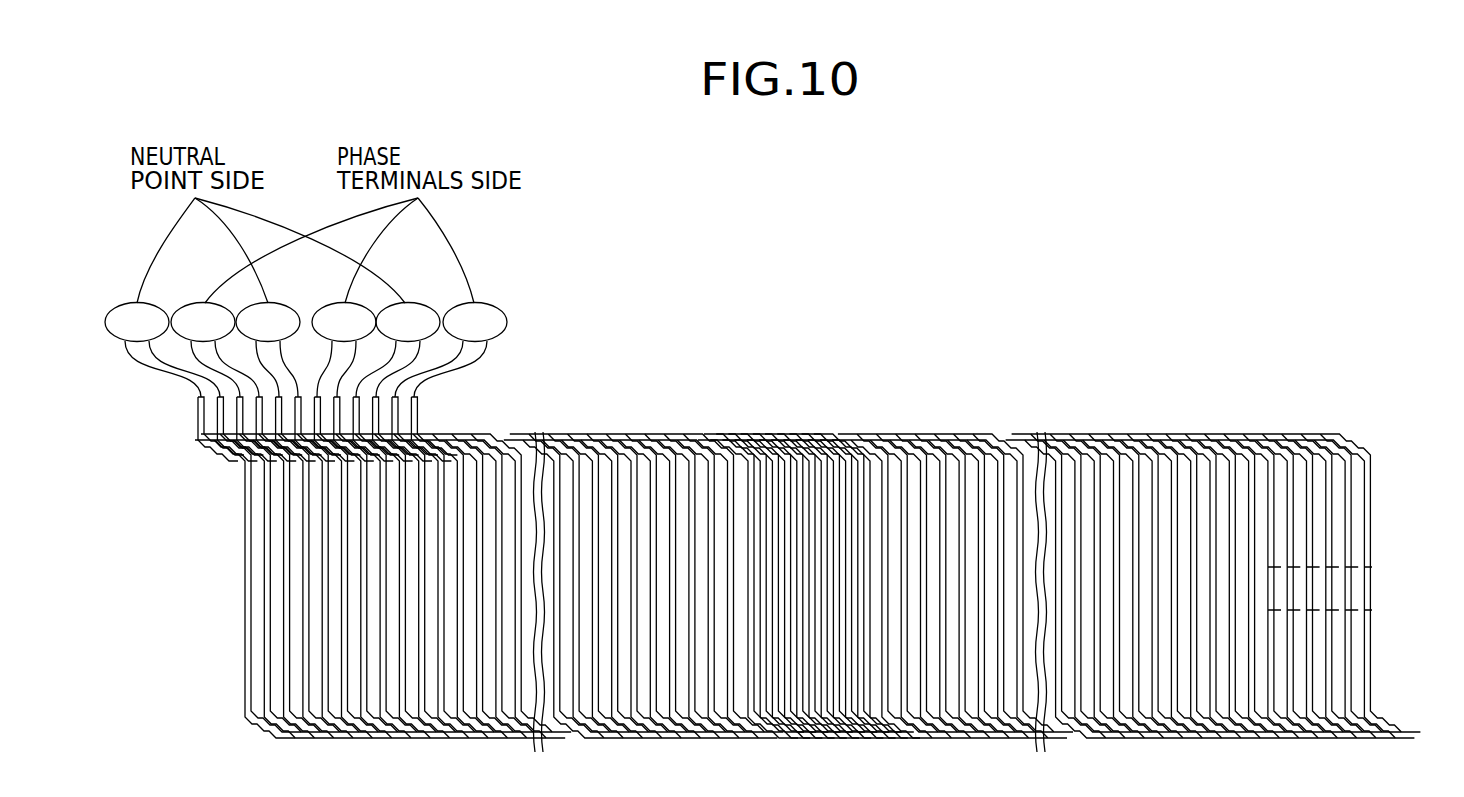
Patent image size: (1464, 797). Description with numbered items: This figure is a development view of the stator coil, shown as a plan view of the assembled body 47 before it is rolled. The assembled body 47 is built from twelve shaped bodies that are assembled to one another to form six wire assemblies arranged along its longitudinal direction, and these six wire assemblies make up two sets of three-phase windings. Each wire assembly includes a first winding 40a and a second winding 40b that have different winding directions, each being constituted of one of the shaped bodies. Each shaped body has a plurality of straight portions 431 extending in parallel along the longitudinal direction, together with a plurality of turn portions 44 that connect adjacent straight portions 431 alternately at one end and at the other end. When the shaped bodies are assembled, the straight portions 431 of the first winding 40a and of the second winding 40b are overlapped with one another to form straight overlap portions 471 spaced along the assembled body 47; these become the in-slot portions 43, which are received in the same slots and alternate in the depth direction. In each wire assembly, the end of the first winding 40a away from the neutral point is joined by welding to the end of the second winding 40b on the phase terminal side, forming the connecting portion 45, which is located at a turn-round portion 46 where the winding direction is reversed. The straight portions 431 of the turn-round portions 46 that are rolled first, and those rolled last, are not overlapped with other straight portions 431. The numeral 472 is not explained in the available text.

The first winding 40a is at (200, 421).
The second winding 40b is at (318, 418).
The in-slot portion 43 is at (236, 571).
The straight portion 431 is at (245, 632).
The turn portion 44 is at (681, 436).
The connecting portion 45 is at (1371, 587).
The turn-round portion 46 is at (1380, 663).
The assembled body 47 is at (1044, 392).
The straight overlap portion 471 is at (242, 699).
The second turn portion 472 is at (256, 718).